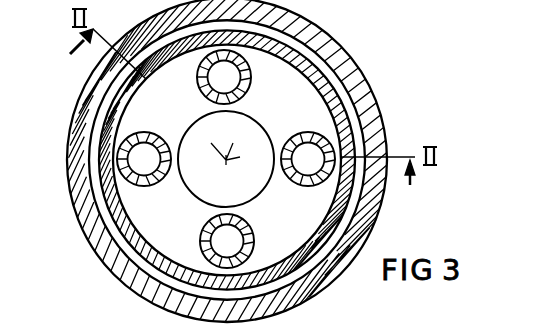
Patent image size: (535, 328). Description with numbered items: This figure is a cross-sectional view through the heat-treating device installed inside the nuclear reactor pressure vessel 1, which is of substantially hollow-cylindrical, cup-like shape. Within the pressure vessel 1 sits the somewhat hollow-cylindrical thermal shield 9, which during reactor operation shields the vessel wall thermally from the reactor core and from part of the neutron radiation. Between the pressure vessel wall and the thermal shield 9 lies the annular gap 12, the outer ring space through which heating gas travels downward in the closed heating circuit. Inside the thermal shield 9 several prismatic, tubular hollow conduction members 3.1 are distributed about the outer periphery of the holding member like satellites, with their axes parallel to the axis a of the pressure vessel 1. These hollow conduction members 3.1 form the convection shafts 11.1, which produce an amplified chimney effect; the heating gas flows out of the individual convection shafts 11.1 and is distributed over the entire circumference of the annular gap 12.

The nuclear reactor pressure vessel 1 is at (89, 85).
The thermal shield 9 is at (350, 113).
The annular gap 12 is at (97, 152).
The axis of the pressure vessel a is at (226, 159).
The hollow conduction member 3.1 is at (249, 80).
The convection shaft 11.1 is at (226, 168).